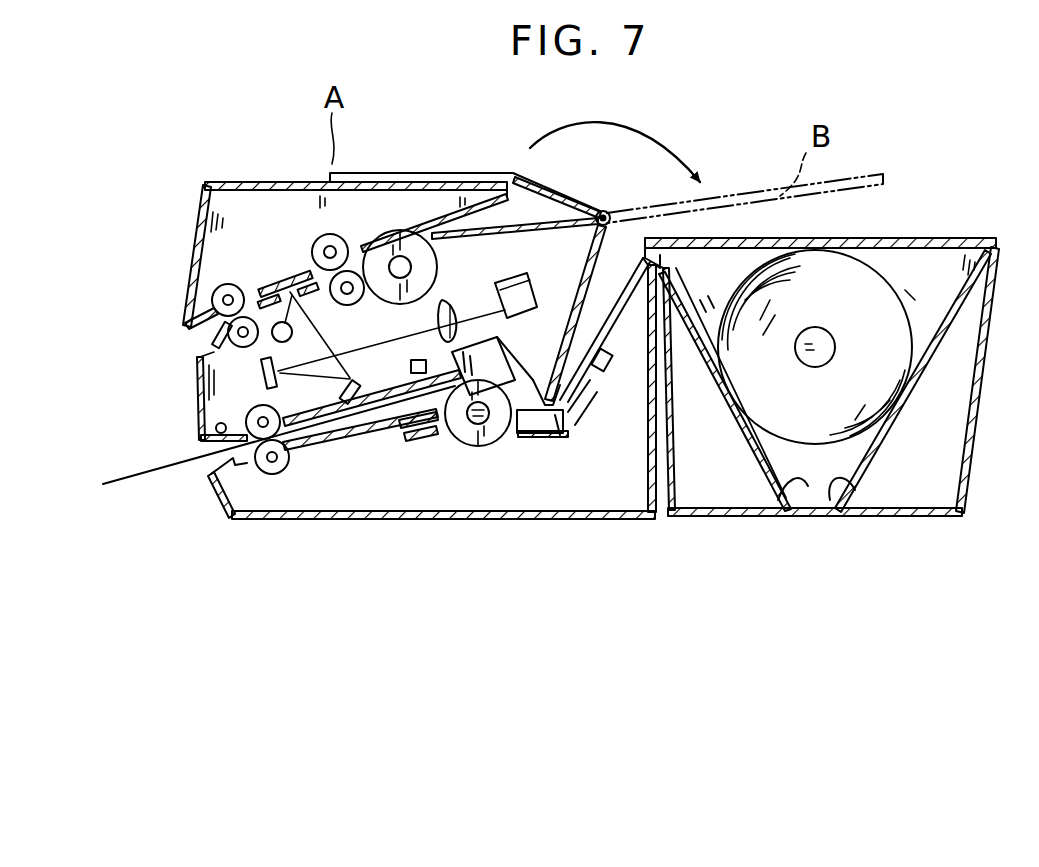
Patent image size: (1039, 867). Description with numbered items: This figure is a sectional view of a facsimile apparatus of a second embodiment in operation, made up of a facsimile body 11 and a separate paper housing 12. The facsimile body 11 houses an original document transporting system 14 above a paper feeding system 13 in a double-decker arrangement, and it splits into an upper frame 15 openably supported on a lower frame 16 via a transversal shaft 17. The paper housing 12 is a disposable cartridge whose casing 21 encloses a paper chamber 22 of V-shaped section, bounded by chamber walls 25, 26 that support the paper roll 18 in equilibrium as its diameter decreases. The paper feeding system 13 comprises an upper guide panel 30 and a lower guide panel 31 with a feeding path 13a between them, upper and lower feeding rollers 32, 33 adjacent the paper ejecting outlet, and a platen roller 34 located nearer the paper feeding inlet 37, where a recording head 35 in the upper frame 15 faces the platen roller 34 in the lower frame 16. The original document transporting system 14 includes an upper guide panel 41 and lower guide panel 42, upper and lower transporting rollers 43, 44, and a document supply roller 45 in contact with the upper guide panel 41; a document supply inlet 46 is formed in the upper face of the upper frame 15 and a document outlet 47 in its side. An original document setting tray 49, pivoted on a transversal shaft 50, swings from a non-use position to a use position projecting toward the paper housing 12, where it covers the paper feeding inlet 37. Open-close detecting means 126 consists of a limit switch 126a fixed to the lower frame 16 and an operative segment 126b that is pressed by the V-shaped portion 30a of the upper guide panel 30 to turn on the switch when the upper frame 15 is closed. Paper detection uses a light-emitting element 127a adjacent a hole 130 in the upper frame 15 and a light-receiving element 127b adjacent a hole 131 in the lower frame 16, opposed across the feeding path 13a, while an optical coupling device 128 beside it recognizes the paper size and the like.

The facsimile body 11 is at (161, 253).
The paper housing 12 is at (820, 336).
The paper feeding system 13 is at (264, 466).
The feeding path 13a is at (540, 458).
The original document transporting system 14 is at (356, 188).
The upper frame 15 is at (149, 237).
The lower frame 16 is at (431, 527).
The transversal shaft 17 is at (179, 413).
The paper roll 18 is at (821, 316).
The casing 21 is at (847, 381).
The paper chamber 22 is at (851, 383).
The chamber wall 25 is at (733, 423).
The chamber wall 26 is at (910, 412).
The upper guide panel 30 is at (501, 362).
The V-shaped portion 30a is at (582, 418).
The lower guide panel 31 is at (566, 488).
The upper feeding roller 32 is at (214, 398).
The lower feeding roller 33 is at (252, 502).
The platen roller 34 is at (478, 443).
The recording head 35 is at (459, 443).
The paper feeding inlet 37 is at (608, 281).
The upper guide panel 41 is at (272, 287).
The lower guide panel 42 is at (515, 246).
The upper transporting roller 43 is at (182, 292).
The lower transporting roller 44 is at (350, 210).
The document supply roller 45 is at (402, 204).
The document supply inlet 46 is at (557, 181).
The document outlet 47 is at (189, 330).
The original document setting tray 49 is at (465, 164).
The transversal shaft 50 is at (612, 178).
The open-close detecting means 126 is at (634, 414).
The limit switch 126a is at (615, 387).
The operative segment 126b is at (598, 433).
The light-emitting element 127a is at (372, 368).
The light-receiving element 127b is at (370, 487).
The optical coupling device 128 is at (390, 442).
The hole 130 is at (343, 371).
The hole 131 is at (389, 438).